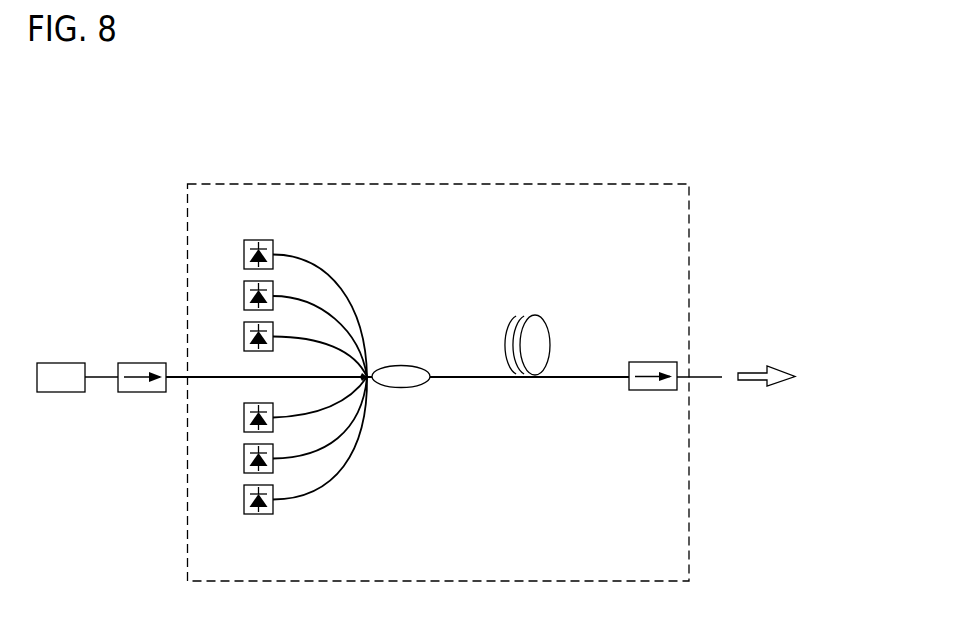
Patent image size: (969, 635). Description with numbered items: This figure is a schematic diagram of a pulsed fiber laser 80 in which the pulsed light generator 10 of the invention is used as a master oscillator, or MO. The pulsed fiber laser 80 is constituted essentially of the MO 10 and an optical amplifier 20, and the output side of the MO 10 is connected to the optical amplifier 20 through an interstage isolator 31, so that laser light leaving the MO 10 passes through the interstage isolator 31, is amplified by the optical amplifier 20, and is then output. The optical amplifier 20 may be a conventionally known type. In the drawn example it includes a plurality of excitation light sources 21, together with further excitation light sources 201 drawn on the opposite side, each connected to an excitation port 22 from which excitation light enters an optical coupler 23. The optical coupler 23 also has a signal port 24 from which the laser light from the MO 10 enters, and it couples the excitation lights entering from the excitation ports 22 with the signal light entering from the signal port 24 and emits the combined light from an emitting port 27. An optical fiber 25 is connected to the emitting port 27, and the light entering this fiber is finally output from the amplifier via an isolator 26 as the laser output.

The pulsed fiber laser 80 is at (693, 157).
The optical amplifier 20 is at (535, 178).
The pulsed light generator 10 is at (63, 363).
The interstage isolator 31 is at (140, 363).
The excitation light source 21 is at (244, 253).
The excitation light source 201 is at (244, 418).
The excitation port 22 is at (320, 264).
The optical coupler 23 is at (405, 365).
The signal port 24 is at (317, 379).
The optical fiber 25 is at (545, 316).
The isolator 26 is at (650, 362).
The emitting port 27 is at (472, 379).